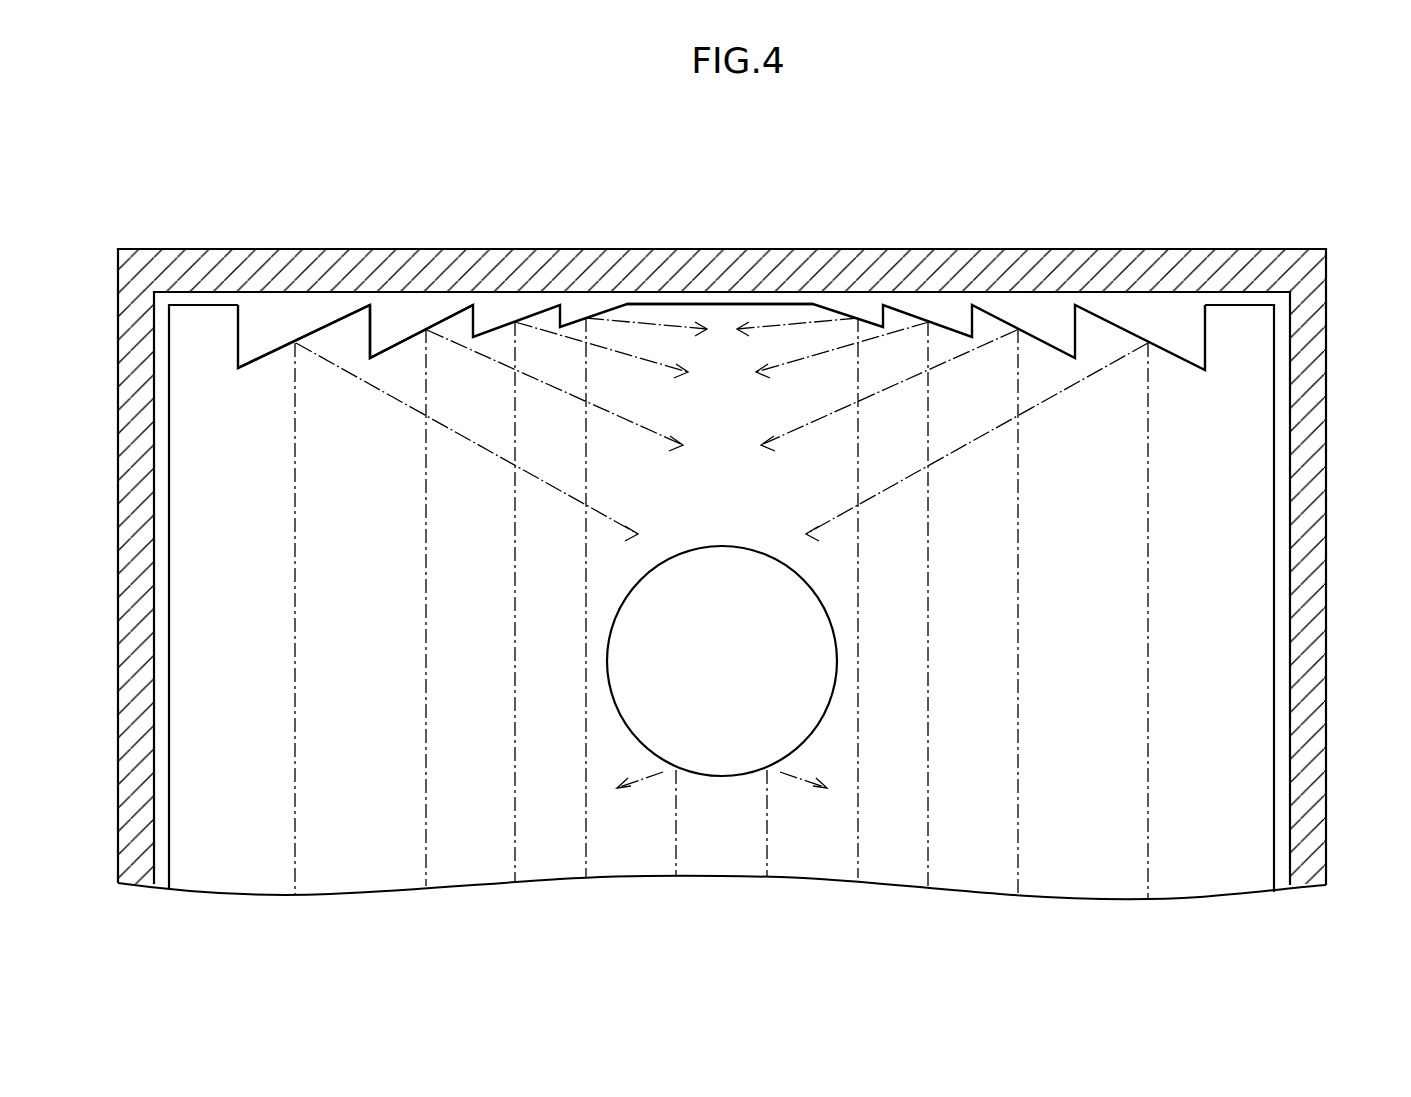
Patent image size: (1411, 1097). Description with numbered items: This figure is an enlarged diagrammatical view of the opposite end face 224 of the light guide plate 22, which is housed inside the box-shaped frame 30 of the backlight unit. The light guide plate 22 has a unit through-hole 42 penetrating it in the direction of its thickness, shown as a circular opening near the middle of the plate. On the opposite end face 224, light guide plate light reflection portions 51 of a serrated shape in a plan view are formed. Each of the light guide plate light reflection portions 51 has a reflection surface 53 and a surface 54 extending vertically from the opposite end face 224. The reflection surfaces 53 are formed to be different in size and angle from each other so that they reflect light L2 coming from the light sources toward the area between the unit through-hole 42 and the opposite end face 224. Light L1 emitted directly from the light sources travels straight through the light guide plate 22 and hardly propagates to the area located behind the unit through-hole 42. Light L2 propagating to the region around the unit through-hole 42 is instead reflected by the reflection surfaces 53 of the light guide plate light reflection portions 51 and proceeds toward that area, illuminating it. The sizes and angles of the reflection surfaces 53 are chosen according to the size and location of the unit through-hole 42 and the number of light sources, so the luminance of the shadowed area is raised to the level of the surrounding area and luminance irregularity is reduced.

The frame 30 is at (132, 422).
The light guide plate 22 is at (1208, 682).
The light guide plate light reflection portions 51 is at (1147, 315).
The reflection surfaces 53 is at (318, 327).
The surfaces extending vertically 54 is at (378, 323).
The opposite end face 224 is at (731, 303).
The unit through-hole 42 is at (620, 695).
The light L1 is at (677, 845).
The light L2 is at (1150, 838).